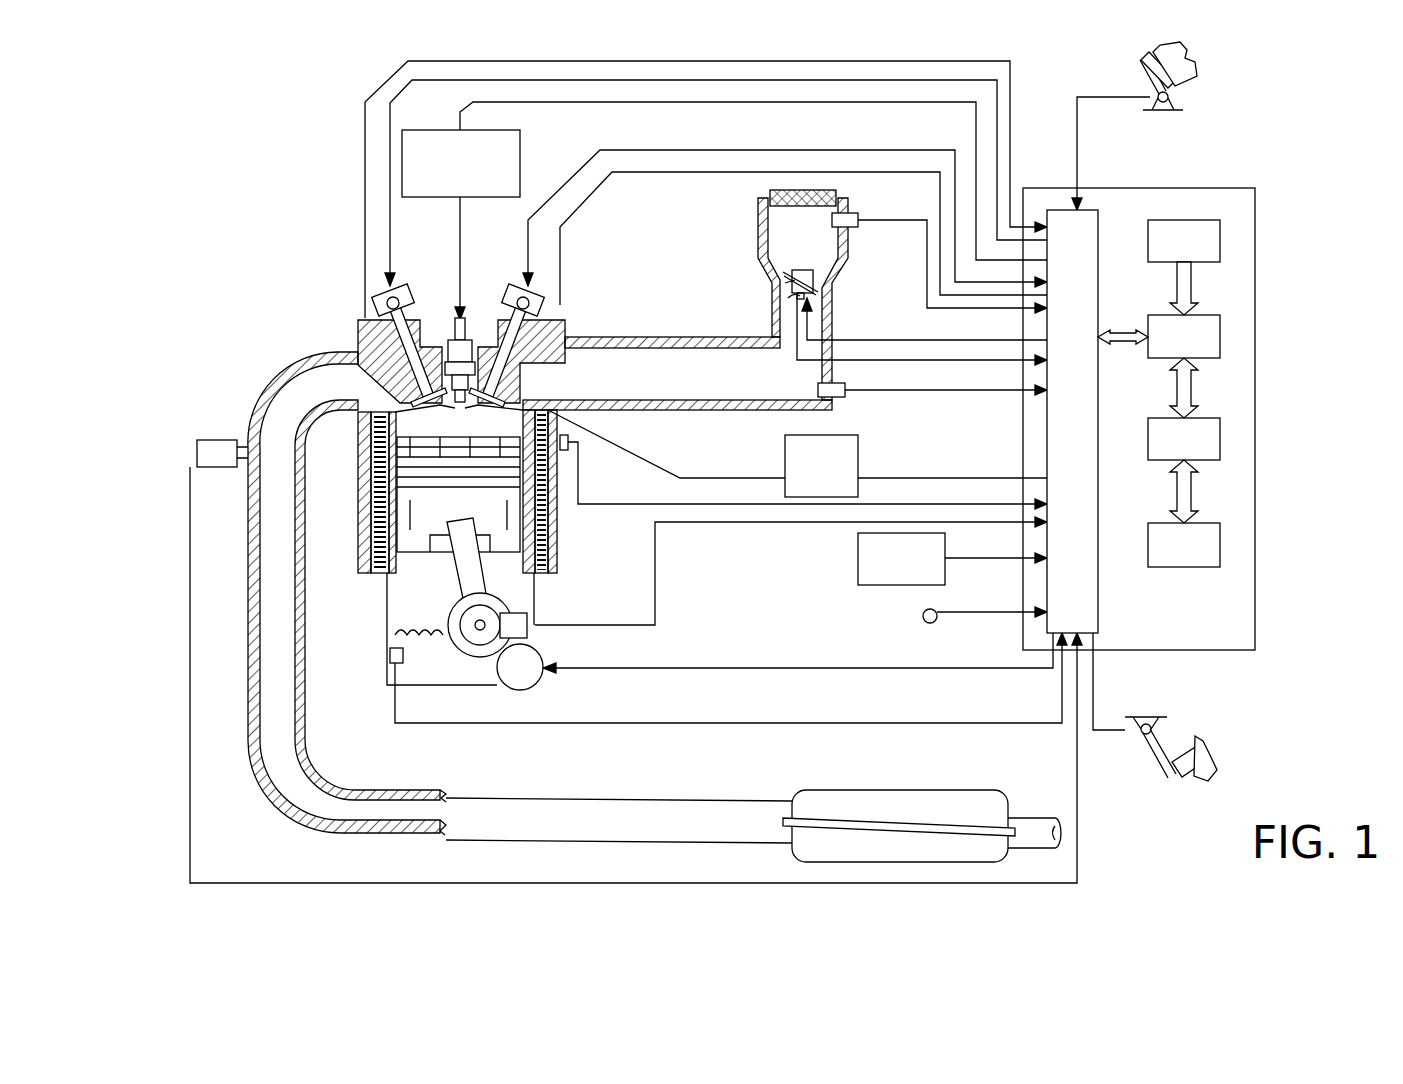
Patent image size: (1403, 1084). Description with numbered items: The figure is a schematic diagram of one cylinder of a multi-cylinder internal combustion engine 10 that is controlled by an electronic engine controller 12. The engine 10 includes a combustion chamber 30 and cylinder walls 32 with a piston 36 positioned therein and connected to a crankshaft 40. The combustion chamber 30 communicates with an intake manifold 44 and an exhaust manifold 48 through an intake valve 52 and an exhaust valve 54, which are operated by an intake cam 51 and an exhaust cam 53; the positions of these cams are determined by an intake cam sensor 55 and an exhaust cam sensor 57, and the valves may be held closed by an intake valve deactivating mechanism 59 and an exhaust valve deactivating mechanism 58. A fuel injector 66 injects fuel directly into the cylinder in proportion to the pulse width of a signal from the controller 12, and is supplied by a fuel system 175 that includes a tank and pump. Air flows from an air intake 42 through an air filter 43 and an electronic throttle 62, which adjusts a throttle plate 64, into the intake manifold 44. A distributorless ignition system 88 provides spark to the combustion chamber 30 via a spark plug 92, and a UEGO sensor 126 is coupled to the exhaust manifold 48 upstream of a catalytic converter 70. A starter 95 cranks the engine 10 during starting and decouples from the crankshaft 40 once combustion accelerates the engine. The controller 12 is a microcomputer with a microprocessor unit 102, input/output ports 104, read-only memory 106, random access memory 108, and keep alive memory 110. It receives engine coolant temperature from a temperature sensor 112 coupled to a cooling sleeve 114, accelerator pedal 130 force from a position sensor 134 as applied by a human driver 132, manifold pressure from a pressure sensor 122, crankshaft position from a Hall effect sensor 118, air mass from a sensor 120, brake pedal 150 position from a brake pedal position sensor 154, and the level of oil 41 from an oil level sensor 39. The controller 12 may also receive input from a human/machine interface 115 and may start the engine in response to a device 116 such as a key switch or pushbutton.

The internal combustion engine 10 is at (284, 268).
The electronic engine controller 12 is at (1255, 190).
The combustion chamber 30 is at (385, 513).
The cylinder walls 32 is at (402, 572).
The piston 36 is at (434, 638).
The oil level sensor 39 is at (390, 665).
The crankshaft 40 is at (470, 655).
The oil 41 is at (385, 651).
The air intake 42 is at (803, 299).
The air filter 43 is at (770, 195).
The intake manifold 44 is at (677, 373).
The exhaust manifold 48 is at (520, 597).
The intake cam 51 is at (518, 288).
The intake valve 52 is at (508, 392).
The exhaust cam 53 is at (398, 290).
The exhaust valve 54 is at (410, 390).
The intake cam sensor 55 is at (540, 302).
The exhaust cam sensor 57 is at (378, 300).
The exhaust valve deactivating mechanism 58 is at (405, 310).
The intake valve deactivating mechanism 59 is at (515, 310).
The electronic throttle 62 is at (816, 281).
The throttle plate 64 is at (790, 284).
The fuel injector 66 is at (580, 420).
The catalytic converter 70 is at (838, 790).
The distributorless ignition system 88 is at (418, 130).
The spark plug 92 is at (467, 318).
The starter 95 is at (520, 682).
The microprocessor unit 102 is at (1220, 340).
The input/output ports 104 is at (1098, 218).
The read-only memory 106 is at (1220, 242).
The random access memory 108 is at (1220, 440).
The keep alive memory 110 is at (1220, 545).
The temperature sensor 112 is at (577, 446).
The cooling sleeve 114 is at (548, 524).
The human/machine interface 115 is at (901, 559).
The device 116 is at (936, 622).
The Hall effect sensor 118 is at (530, 613).
The sensor 120 is at (852, 213).
The pressure sensor 122 is at (840, 397).
The Universal Exhaust Gas Oxygen sensor 126 is at (197, 442).
The accelerator pedal 130 is at (1150, 92).
The human driver 132 is at (1197, 52).
The position sensor 134 is at (1170, 98).
The brake pedal 150 is at (1170, 778).
The brake pedal position sensor 154 is at (1140, 731).
The fuel system 175 is at (821, 466).